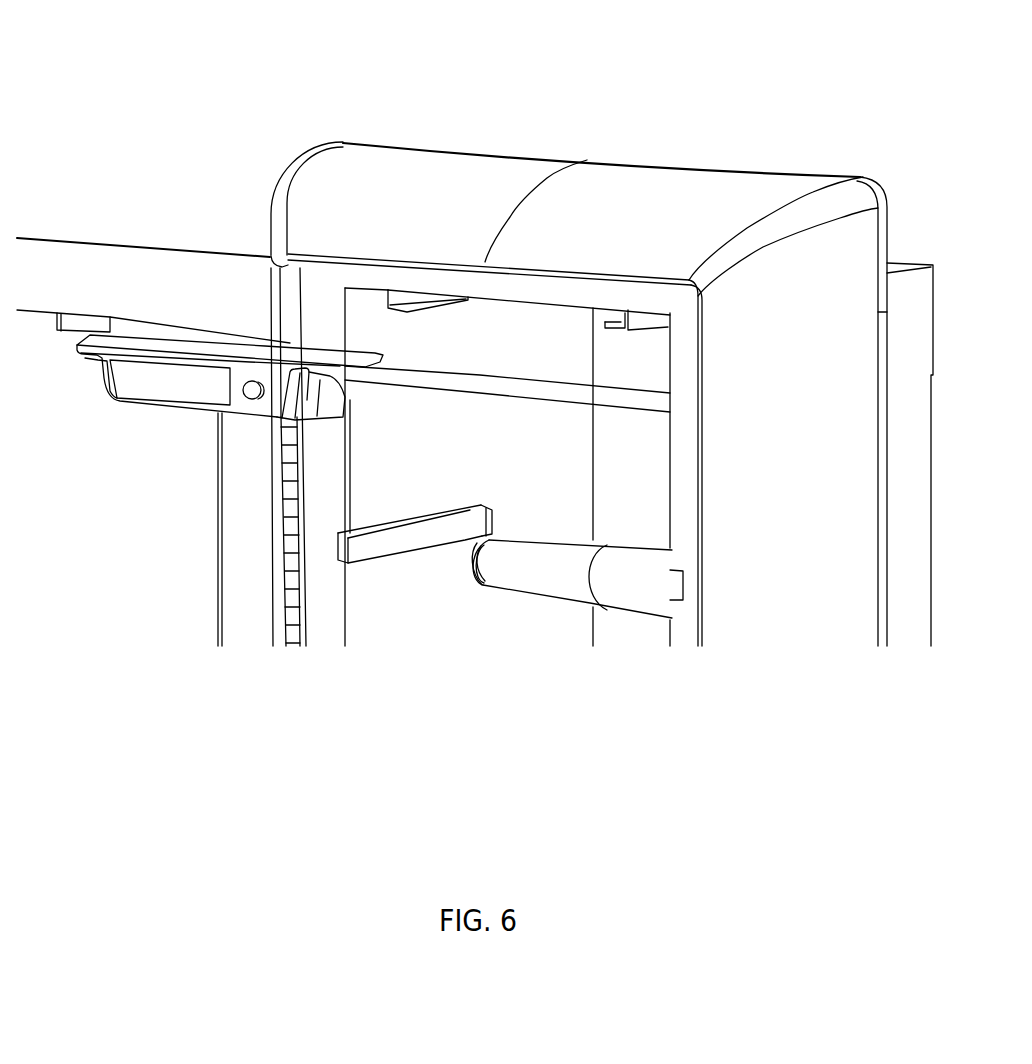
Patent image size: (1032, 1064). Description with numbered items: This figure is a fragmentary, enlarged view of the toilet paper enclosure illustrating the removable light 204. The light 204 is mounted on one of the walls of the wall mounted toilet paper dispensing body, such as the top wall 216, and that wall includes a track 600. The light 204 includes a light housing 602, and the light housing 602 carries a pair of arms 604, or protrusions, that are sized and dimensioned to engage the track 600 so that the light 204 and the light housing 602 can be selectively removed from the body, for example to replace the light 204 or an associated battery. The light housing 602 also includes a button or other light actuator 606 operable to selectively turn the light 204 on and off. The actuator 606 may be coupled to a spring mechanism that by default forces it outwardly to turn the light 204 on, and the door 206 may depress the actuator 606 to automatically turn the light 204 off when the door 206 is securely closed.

The top wall 216 is at (507, 316).
The track 600 is at (613, 320).
The door 206 is at (247, 636).
The light housing 602 is at (251, 368).
The light 204 is at (158, 378).
The light actuator 606 is at (250, 384).
The arms 604 is at (330, 368).